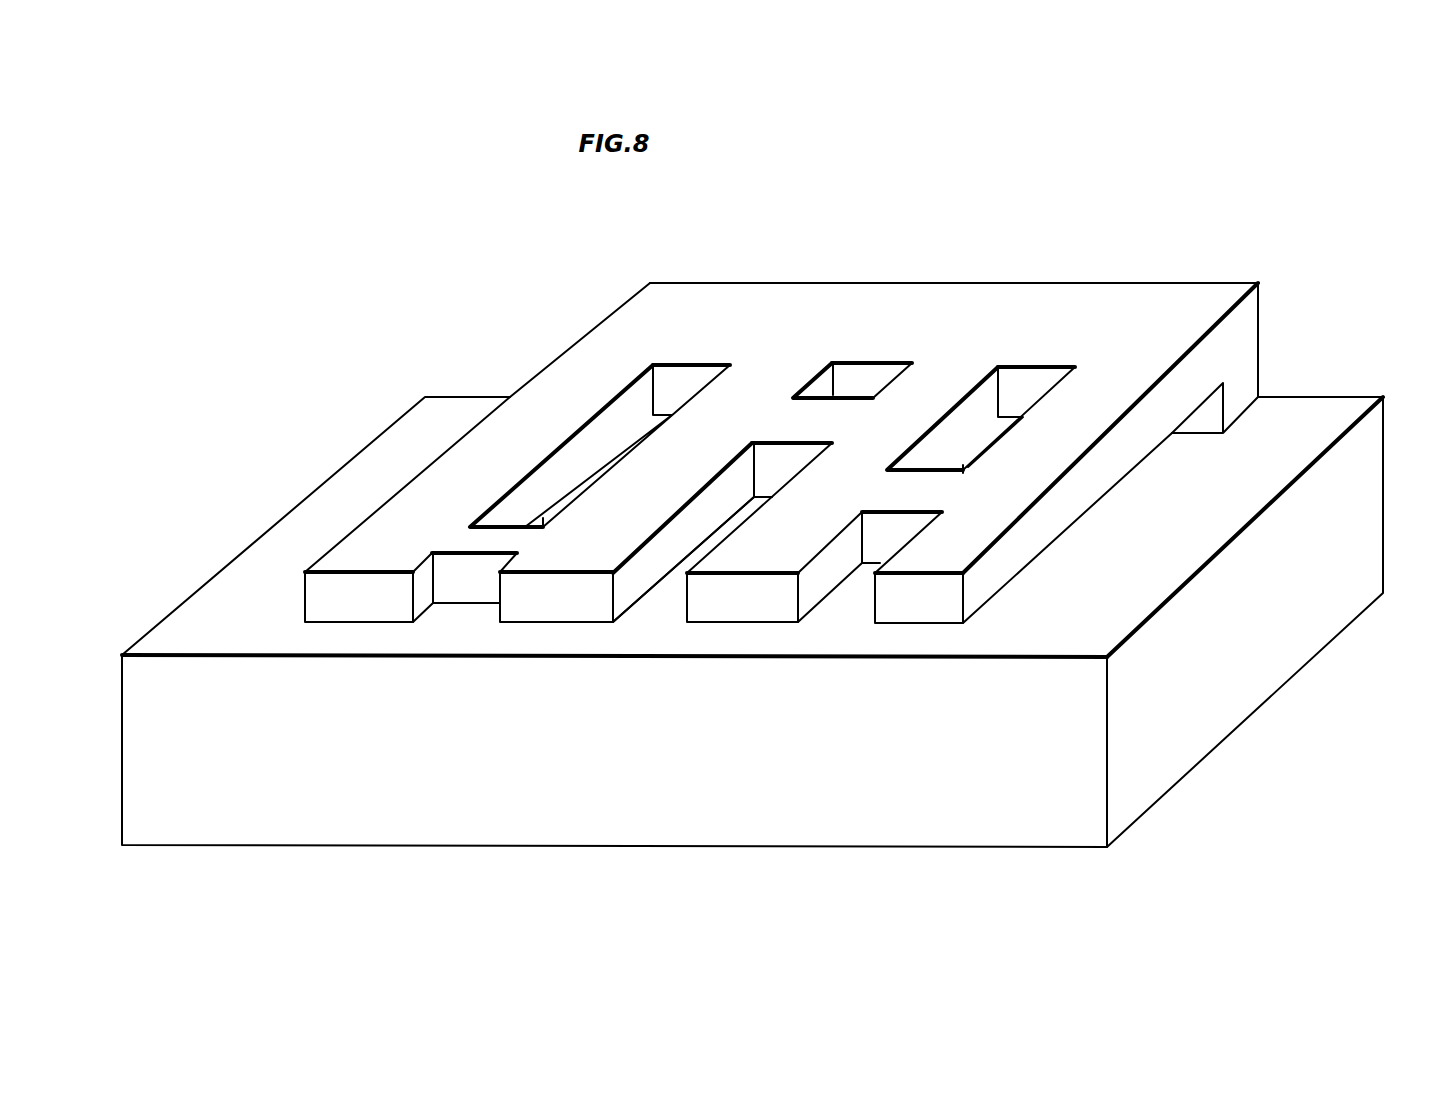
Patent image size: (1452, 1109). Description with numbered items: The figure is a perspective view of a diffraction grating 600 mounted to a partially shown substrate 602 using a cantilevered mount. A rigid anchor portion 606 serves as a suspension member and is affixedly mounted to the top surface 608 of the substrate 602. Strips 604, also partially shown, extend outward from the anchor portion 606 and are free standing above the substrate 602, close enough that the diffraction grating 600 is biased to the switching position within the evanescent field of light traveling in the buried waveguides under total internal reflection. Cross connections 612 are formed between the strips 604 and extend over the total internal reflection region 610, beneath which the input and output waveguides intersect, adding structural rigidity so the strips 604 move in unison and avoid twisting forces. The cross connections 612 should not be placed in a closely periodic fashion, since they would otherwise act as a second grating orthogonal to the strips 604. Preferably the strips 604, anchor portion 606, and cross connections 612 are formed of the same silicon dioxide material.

The diffraction grating 600 is at (1070, 308).
The substrate 602 is at (1333, 618).
The strips 604 is at (758, 387).
The rigid anchor portion 606 is at (1215, 313).
The top surface 608 is at (1303, 432).
The total internal reflection region 610 is at (662, 602).
The cross connections 612 is at (830, 423).